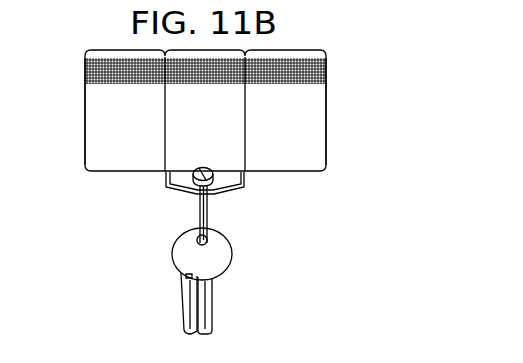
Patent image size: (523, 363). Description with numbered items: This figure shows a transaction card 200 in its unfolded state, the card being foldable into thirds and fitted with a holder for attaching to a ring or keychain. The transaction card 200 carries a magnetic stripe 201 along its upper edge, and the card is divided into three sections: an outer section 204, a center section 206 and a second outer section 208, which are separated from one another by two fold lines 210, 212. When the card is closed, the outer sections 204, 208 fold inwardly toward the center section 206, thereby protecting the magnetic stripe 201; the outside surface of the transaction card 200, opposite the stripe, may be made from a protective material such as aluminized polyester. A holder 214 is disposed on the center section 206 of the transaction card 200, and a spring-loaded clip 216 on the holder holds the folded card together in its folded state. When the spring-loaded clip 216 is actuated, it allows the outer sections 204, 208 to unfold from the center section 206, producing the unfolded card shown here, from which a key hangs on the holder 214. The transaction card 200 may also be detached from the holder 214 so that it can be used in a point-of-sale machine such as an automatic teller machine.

The transaction card 200 is at (310, 160).
The magnetic stripe 201 is at (307, 60).
The outer section 204 is at (305, 135).
The center section 206 is at (193, 148).
The outer section 208 is at (95, 150).
The fold line 210 is at (245, 143).
The fold line 212 is at (165, 128).
The holder 214 is at (228, 194).
The spring-loaded clip 216 is at (190, 192).